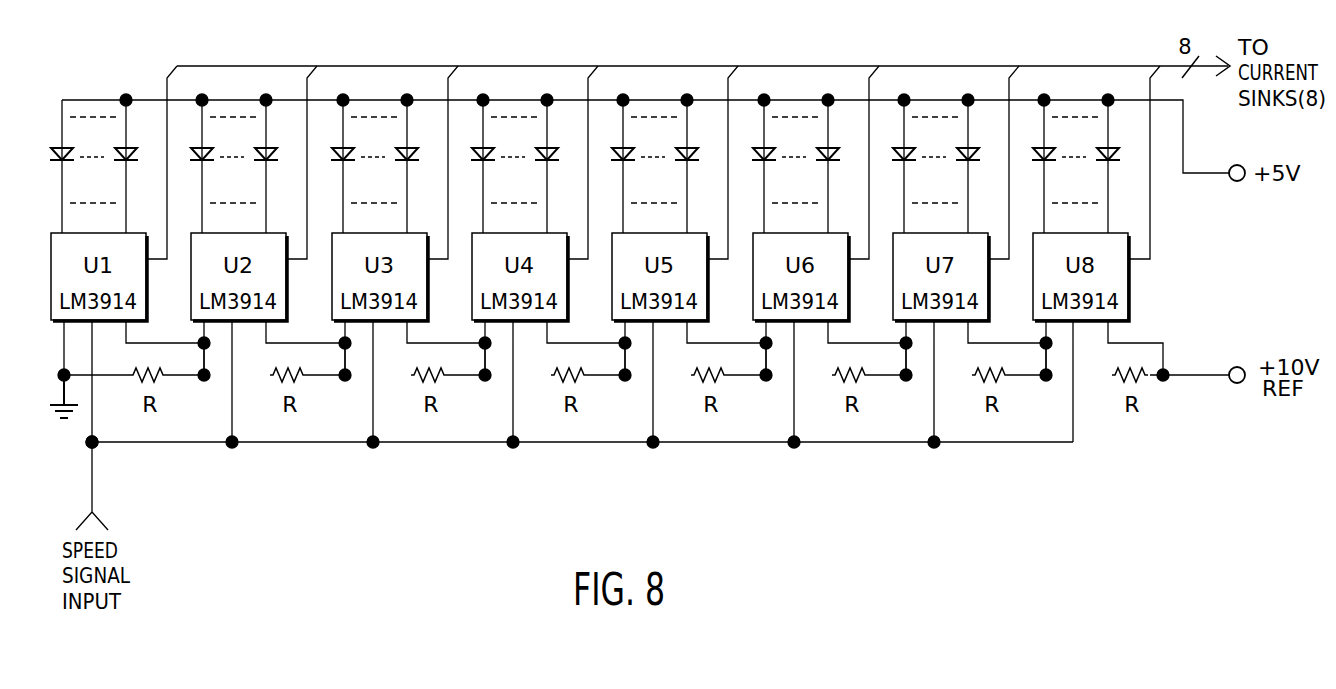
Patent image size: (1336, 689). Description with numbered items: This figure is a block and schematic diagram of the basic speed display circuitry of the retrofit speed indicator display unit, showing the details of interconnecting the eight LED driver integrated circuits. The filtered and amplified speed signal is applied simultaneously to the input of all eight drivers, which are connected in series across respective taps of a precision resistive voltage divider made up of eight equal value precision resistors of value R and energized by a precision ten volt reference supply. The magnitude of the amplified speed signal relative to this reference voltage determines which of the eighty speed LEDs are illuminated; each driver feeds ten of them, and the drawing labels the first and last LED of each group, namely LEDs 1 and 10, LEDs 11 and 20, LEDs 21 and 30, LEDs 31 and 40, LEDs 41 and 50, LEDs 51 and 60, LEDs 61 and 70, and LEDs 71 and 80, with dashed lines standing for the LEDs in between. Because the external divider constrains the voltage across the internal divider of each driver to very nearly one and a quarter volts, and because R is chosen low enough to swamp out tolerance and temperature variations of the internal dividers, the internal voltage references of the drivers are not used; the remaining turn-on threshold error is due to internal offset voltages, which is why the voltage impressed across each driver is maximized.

The light emitting diode 1 is at (57, 166).
The light emitting diode 10 is at (115, 163).
The light emitting diode 11 is at (194, 163).
The light emitting diode 20 is at (255, 163).
The light emitting diode 21 is at (335, 163).
The light emitting diode 30 is at (396, 163).
The light emitting diode 31 is at (475, 163).
The light emitting diode 40 is at (536, 163).
The light emitting diode 41 is at (615, 163).
The light emitting diode 50 is at (676, 163).
The amplifier 51 is at (756, 163).
The light emitting diode 60 is at (817, 163).
The light emitting diode 61 is at (896, 163).
The light emitting diode 70 is at (957, 163).
The light emitting diode 71 is at (1036, 163).
The light emitting diode 80 is at (1097, 163).